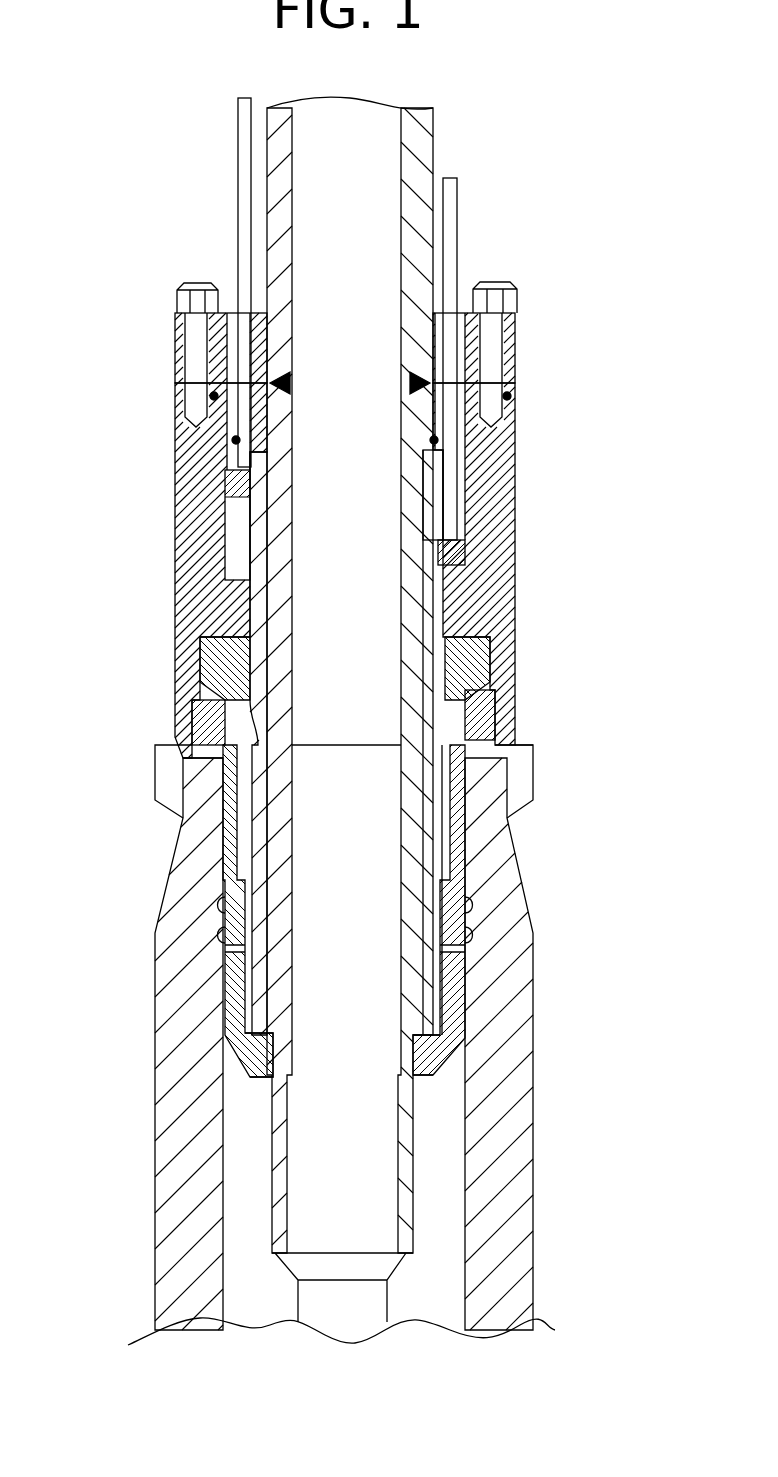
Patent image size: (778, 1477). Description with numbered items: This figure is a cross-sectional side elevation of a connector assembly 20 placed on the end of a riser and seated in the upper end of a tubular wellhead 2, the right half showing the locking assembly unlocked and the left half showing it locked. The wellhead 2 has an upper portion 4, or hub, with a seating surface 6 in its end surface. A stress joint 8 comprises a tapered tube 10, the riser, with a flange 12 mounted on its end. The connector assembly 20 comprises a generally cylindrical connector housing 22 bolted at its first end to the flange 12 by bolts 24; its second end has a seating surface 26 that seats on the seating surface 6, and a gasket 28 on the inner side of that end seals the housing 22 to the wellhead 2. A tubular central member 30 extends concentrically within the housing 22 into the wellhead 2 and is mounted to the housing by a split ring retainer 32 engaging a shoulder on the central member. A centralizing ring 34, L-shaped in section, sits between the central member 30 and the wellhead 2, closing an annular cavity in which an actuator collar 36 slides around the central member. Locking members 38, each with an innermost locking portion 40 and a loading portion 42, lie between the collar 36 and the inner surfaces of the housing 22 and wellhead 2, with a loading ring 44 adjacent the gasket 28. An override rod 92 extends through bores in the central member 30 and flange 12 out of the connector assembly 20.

The tubular wellhead 2 is at (500, 1247).
The upper portion 4 is at (500, 790).
The seating surface 6 is at (527, 757).
The stress joint 8 is at (460, 148).
The tapered tube 10 is at (262, 162).
The flange 12 is at (178, 334).
The connector assembly 20 is at (548, 543).
The connector housing 22 is at (515, 588).
The bolts 24 is at (195, 358).
The seating surface 26 is at (205, 732).
The gasket 28 is at (185, 765).
The tubular central member 30 is at (278, 1142).
The split ring retainer 32 is at (212, 398).
The centralizing ring 34 is at (458, 1045).
The actuator collar 36 is at (462, 900).
The locking members 38 is at (225, 852).
The locking portion 40 is at (220, 928).
The loading portion 42 is at (208, 660).
The loading ring 44 is at (495, 715).
The override rod 92 is at (240, 235).